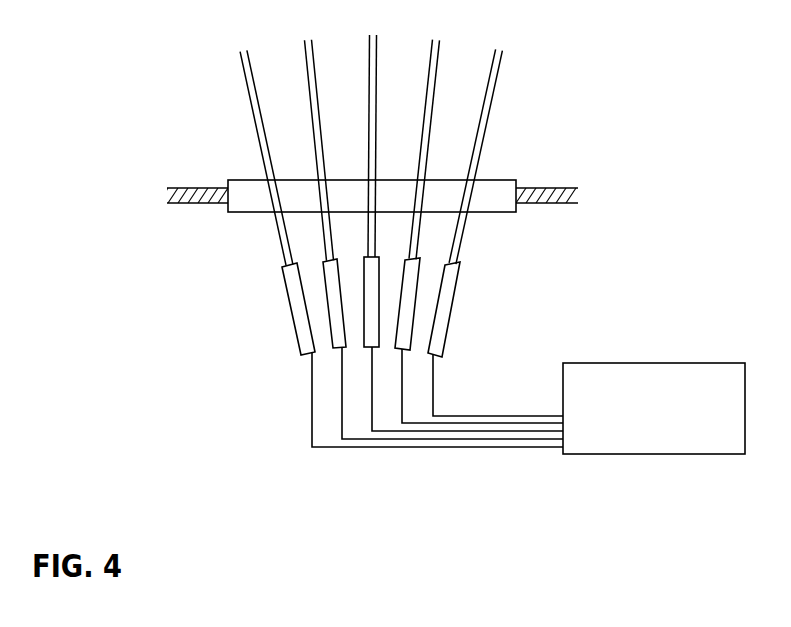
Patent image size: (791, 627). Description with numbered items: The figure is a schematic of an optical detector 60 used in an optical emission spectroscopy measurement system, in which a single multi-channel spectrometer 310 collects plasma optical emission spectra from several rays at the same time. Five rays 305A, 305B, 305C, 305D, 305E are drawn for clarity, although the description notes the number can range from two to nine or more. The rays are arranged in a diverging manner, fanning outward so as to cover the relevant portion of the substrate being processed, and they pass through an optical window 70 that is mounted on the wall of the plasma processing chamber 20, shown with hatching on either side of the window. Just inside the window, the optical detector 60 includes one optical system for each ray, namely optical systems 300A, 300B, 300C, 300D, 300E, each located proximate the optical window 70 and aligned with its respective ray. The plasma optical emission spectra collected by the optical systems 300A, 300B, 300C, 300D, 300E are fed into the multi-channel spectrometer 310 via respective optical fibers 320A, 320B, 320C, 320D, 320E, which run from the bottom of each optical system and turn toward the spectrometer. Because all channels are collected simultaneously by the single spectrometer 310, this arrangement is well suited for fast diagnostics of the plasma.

The optical detector 60 is at (167, 130).
The plasma processing chamber 20 is at (190, 203).
The optical window 70 is at (502, 180).
The ray 305A is at (255, 82).
The ray 305B is at (317, 88).
The ray 305C is at (377, 83).
The ray 305D is at (435, 97).
The ray 305E is at (497, 88).
The optical system 300A is at (285, 280).
The optical system 300B is at (328, 313).
The optical system 300C is at (363, 335).
The optical system 300D is at (418, 290).
The optical system 300E is at (452, 320).
The optical fiber 320A is at (348, 447).
The optical fiber 320B is at (390, 439).
The optical fiber 320C is at (444, 431).
The optical fiber 320D is at (478, 423).
The optical fiber 320E is at (517, 416).
The multi-channel spectrometer 310 is at (634, 418).